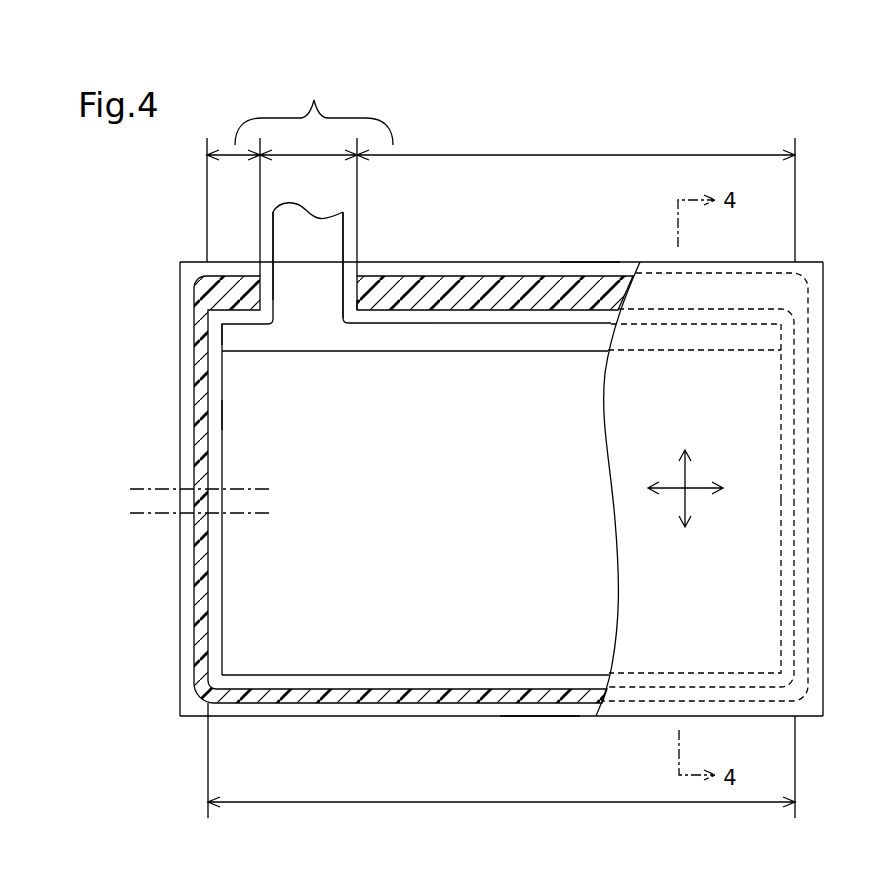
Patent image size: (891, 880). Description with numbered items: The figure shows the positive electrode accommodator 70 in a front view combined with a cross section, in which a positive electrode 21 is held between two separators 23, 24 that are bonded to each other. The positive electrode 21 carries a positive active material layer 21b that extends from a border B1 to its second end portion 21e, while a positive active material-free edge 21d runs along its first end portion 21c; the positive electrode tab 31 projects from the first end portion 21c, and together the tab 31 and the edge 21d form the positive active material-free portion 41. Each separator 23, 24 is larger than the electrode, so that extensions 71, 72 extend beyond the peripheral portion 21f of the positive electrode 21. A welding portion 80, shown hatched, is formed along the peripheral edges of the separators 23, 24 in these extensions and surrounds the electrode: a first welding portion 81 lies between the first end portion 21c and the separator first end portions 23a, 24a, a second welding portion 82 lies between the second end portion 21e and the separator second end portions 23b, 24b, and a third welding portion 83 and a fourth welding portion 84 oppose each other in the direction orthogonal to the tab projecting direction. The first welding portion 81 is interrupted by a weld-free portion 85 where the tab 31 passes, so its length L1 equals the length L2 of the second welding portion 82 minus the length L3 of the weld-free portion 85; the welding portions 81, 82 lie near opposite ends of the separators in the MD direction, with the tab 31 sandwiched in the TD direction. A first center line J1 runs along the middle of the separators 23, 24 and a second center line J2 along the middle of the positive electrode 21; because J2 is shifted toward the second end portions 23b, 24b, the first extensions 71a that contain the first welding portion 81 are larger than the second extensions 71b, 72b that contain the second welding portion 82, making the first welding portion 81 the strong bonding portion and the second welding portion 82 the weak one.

The positive electrode accommodator 70 is at (756, 130).
The extension 72 is at (533, 270).
The second extension 72b is at (285, 708).
The welding portion 80 is at (193, 335).
The third welding portion 83 is at (205, 592).
The second welding portion 82 is at (418, 694).
The first welding portion 81 is at (500, 300).
The positive electrode 21 is at (215, 384).
The peripheral portion 21f is at (217, 413).
The positive active material layer 21b is at (230, 450).
The second end portion 21e is at (352, 675).
The positive active material-free edge 21d is at (396, 326).
The first end portion 21c is at (455, 312).
The positive active material-free portion 41 is at (219, 327).
The positive electrode tab 31 is at (307, 224).
The weld-free portion 85 is at (348, 300).
The border B1 is at (483, 355).
The first center line J1 is at (185, 489).
The second center line J2 is at (185, 518).
The fourth welding portion 84 is at (810, 600).
The extension 71 is at (704, 268).
The first extension 71a is at (706, 404).
The second extension 71b is at (720, 707).
The separator 23 is at (652, 708).
The first end portion 23a is at (652, 263).
The second end portion 23b is at (612, 717).
The separator 24 is at (473, 710).
The first end portion 24a is at (587, 263).
The second end portion 24b is at (535, 718).
The MD direction MD is at (683, 475).
The TD direction TD is at (704, 489).
The length of the first welding portion L1 is at (336, 109).
The length of the second welding portion L2 is at (501, 769).
The length of the weld-free portion L3 is at (308, 144).